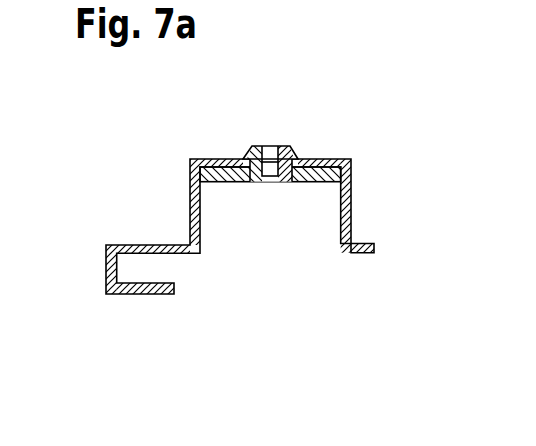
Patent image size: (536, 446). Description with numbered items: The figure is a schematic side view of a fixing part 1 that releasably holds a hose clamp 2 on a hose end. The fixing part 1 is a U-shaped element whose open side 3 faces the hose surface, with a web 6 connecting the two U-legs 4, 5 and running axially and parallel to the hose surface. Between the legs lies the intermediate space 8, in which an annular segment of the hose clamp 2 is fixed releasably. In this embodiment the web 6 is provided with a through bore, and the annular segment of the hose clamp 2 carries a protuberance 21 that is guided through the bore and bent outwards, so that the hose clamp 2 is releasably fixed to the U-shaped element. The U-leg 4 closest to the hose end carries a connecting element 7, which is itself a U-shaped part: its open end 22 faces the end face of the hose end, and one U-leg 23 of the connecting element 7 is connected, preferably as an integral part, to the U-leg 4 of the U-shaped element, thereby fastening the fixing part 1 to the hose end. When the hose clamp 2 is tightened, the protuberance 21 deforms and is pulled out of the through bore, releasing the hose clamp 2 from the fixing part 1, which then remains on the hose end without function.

The fixing part 1 is at (152, 177).
The hose clamp 2 is at (322, 162).
The open side 3 is at (305, 262).
The U-leg 4 is at (190, 228).
The U-leg 5 is at (352, 231).
The web 6 is at (217, 160).
The connecting element 7 is at (83, 310).
The intermediate space 8 is at (307, 215).
The protuberance 21 is at (268, 147).
The open end 22 is at (182, 269).
The U-leg 23 is at (126, 246).